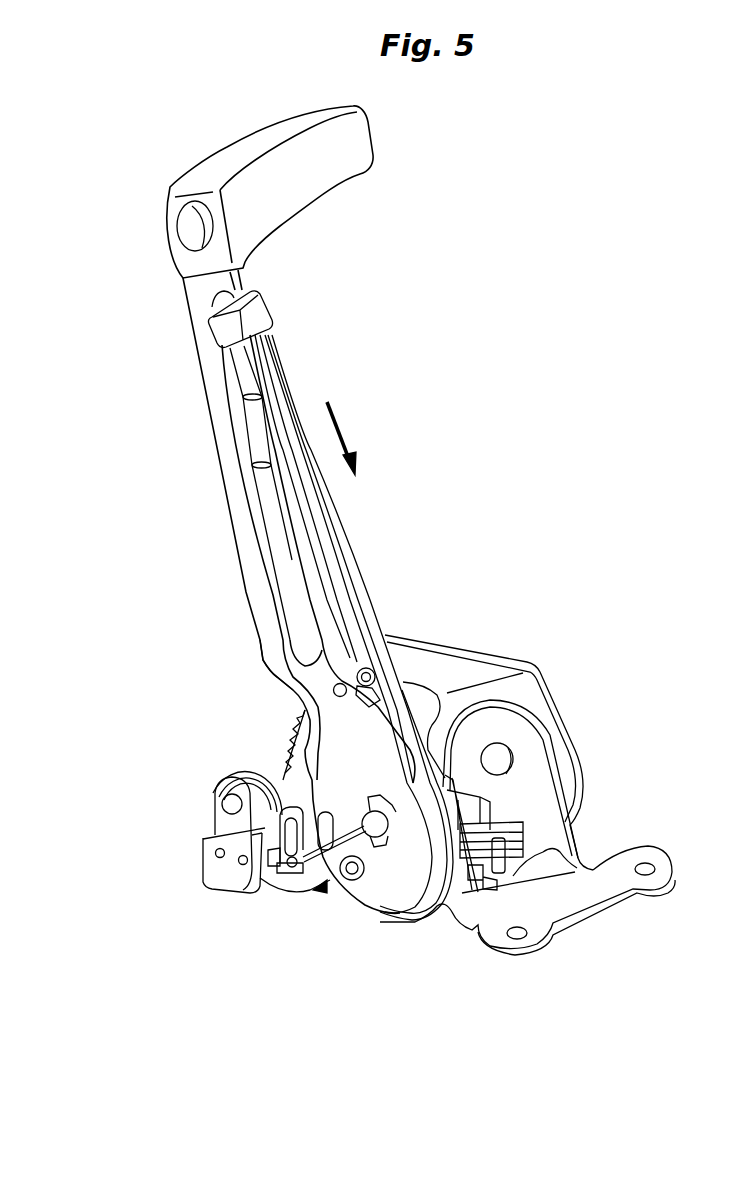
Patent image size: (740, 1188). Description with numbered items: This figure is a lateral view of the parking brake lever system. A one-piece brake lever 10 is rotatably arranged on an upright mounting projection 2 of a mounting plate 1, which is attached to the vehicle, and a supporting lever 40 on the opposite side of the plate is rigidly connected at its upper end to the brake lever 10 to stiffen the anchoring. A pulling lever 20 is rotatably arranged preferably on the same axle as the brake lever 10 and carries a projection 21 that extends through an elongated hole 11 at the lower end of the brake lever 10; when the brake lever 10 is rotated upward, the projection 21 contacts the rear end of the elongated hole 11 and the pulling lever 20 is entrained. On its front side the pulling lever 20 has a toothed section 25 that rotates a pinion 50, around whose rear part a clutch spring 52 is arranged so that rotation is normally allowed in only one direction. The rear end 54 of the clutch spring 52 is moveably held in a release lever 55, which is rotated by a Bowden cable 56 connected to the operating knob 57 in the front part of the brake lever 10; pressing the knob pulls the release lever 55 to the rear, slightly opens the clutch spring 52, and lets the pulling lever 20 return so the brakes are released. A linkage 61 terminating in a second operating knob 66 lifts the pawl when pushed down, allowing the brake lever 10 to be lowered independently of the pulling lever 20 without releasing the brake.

The mounting plate 1 is at (587, 893).
The mounting projection 2 is at (293, 893).
The brake lever 10 is at (228, 422).
The elongated hole 11 is at (323, 893).
The pulling lever 20 is at (302, 765).
The projection 21 is at (353, 881).
The toothed section 25 is at (243, 762).
The supporting lever 40 is at (532, 693).
The pinion 50 is at (227, 768).
The clutch spring 52 is at (243, 757).
The rear end 54 is at (260, 878).
The release lever 55 is at (265, 838).
The Bowden cable 56 is at (363, 613).
The operating knob 57 is at (187, 230).
The linkage 61 is at (300, 545).
The operating knob 66 is at (253, 320).